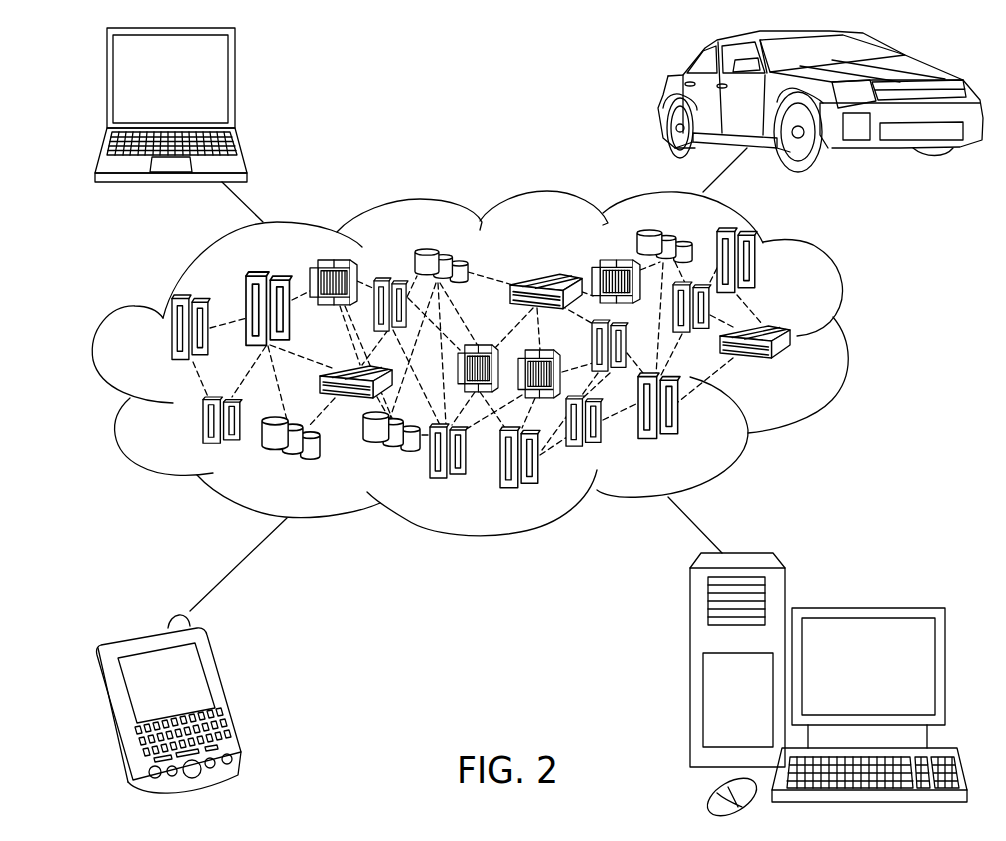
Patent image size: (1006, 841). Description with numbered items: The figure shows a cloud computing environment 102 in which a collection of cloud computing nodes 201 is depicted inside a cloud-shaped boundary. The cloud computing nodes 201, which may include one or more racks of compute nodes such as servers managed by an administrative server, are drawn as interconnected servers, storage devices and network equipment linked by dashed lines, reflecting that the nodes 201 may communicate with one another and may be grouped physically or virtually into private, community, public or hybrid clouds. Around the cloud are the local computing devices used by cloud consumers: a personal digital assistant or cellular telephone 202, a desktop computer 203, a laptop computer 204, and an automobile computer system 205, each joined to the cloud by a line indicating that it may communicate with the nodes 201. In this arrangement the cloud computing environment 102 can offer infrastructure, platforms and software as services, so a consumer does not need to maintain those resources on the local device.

The cloud computing environment 102 is at (847, 337).
The cloud computing nodes 201 is at (385, 235).
The personal digital assistant (PDA) or cellular telephone 202 is at (227, 695).
The desktop computer 203 is at (865, 608).
The laptop computer 204 is at (236, 87).
The automobile computer system 205 is at (660, 100).